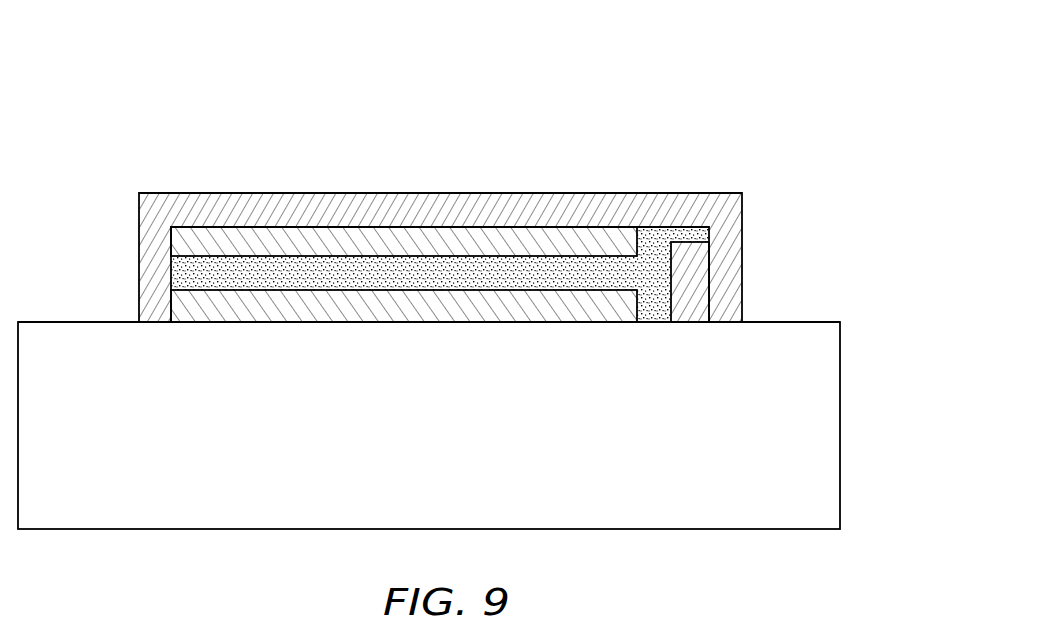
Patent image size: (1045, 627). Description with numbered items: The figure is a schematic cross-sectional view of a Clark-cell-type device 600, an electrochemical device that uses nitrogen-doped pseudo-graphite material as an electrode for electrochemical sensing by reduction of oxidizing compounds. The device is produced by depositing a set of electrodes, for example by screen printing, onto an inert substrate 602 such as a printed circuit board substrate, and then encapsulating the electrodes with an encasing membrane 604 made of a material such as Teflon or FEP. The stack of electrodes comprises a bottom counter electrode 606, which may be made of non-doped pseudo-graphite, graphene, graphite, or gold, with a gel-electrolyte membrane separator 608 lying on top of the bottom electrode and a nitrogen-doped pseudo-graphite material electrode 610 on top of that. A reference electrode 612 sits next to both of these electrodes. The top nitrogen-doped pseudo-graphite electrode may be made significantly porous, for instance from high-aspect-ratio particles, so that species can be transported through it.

The Clark-cell-type device 600 is at (128, 135).
The inert substrate 602 is at (826, 433).
The encasing membrane 604 is at (393, 208).
The bottom counter electrode 606 is at (175, 312).
The gel-electrolyte membrane separator 608 is at (518, 268).
The nitrogen-doped pseudo-graphite material electrode 610 is at (233, 242).
The reference electrode 612 is at (692, 272).